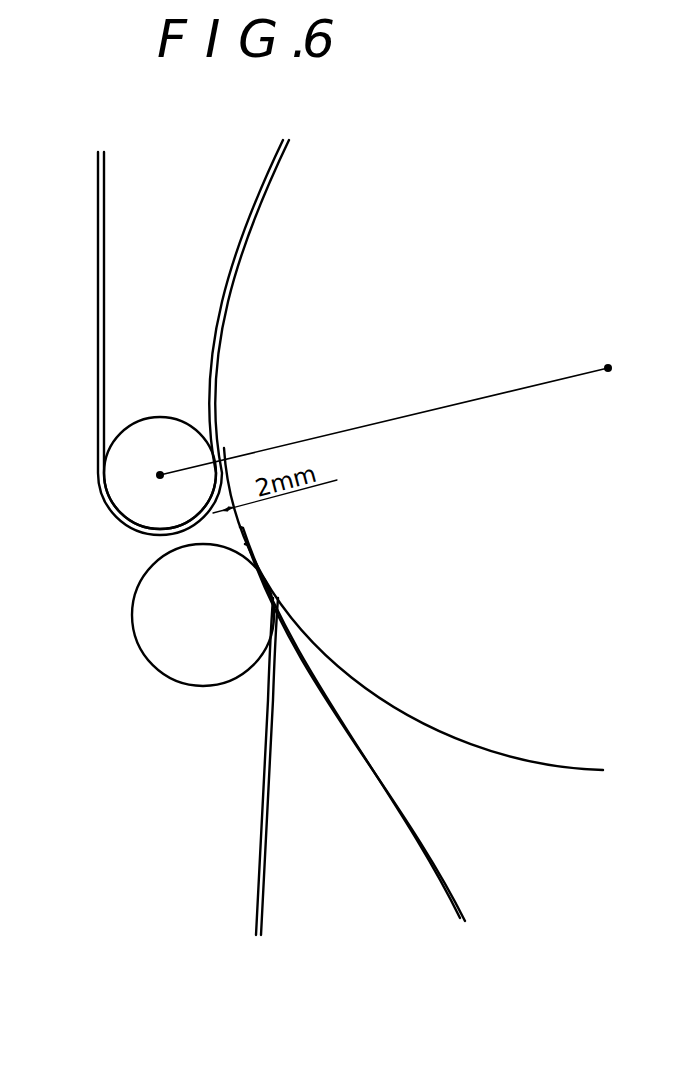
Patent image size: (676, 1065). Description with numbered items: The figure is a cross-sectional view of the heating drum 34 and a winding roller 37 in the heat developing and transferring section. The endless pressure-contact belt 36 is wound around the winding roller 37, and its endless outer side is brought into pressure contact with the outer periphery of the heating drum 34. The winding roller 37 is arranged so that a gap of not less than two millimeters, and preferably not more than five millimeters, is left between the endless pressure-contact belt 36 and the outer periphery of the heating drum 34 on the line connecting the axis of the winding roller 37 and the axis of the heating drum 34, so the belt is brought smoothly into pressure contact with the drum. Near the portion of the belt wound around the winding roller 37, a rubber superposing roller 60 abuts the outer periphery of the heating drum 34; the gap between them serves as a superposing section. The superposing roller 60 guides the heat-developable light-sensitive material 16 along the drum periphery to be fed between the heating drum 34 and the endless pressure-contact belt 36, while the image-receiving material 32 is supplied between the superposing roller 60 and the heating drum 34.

The heat-developable light-sensitive material 16 is at (413, 841).
The image-receiving material 32 is at (260, 857).
The heating drum 34 is at (523, 766).
The endless pressure-contact belt 36 is at (98, 302).
The winding roller 37 is at (158, 414).
The superposing roller 60 is at (195, 687).